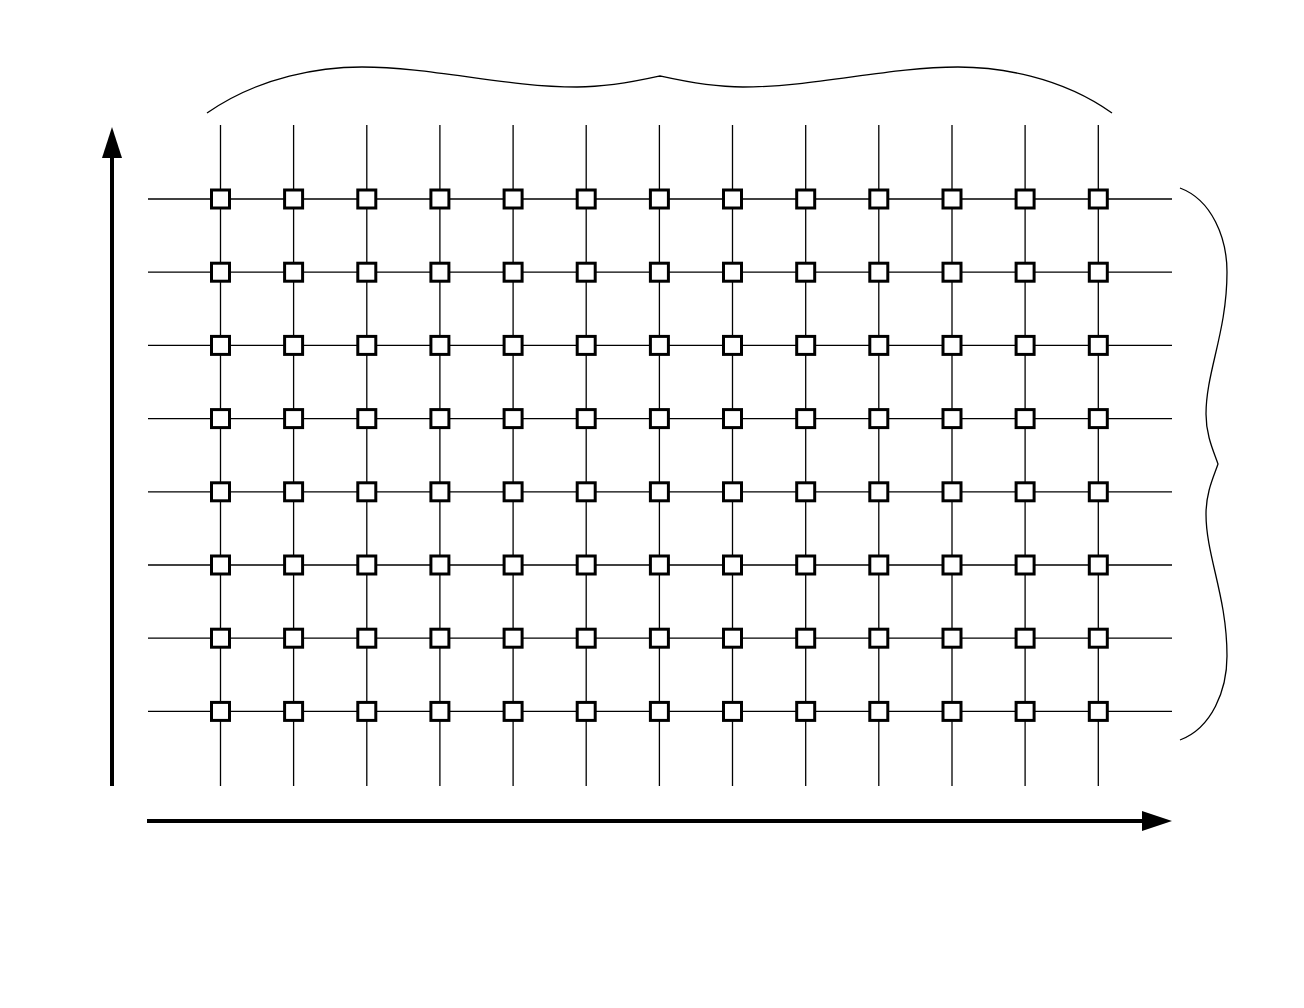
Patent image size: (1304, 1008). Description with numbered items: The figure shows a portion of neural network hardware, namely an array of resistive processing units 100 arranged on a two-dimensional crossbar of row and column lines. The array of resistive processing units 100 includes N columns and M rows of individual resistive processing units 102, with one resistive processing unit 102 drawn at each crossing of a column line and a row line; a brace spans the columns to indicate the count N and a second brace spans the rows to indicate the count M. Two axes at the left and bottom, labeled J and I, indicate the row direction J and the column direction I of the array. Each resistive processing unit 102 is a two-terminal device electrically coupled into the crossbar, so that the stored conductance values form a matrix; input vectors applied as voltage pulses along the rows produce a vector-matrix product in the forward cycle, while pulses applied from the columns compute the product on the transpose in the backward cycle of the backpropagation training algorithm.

The array of resistive processing units 100 is at (90, 72).
The resistive processing unit 102 is at (219, 716).
The number of columns N is at (659, 75).
The number of rows M is at (1220, 464).
The row index axis J is at (93, 456).
The column index axis I is at (659, 843).